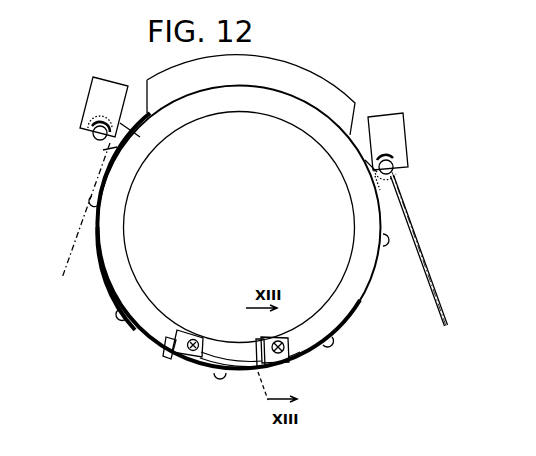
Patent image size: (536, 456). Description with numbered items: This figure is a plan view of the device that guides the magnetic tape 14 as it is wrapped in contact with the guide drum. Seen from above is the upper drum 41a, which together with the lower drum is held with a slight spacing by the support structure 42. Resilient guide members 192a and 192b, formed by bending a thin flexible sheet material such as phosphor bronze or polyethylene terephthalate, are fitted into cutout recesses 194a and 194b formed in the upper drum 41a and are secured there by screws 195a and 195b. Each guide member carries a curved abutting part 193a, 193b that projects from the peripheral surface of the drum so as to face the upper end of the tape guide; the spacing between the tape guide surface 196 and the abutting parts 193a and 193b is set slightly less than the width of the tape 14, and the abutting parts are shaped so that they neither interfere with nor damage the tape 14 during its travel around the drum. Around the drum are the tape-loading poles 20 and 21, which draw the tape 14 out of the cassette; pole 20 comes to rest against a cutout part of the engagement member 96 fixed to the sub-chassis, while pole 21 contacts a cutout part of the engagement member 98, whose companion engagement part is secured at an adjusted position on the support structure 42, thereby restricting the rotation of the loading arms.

The magnetic tape 14 is at (425, 244).
The pole 20 is at (398, 156).
The pole 21 is at (93, 140).
The upper drum 41a is at (369, 284).
The support structure 42 is at (317, 84).
The engagement member 96 is at (393, 118).
The engagement member 98 is at (111, 85).
The resilient guide member 192a is at (204, 338).
The resilient guide member 192b is at (284, 338).
The curved abutting part 193a is at (178, 356).
The curved abutting part 193b is at (272, 365).
The cutout recess 194a is at (182, 328).
The cutout recess 194b is at (257, 338).
The screw 195a is at (194, 358).
The screw 195b is at (289, 357).
The tape guide surface 196 is at (110, 289).